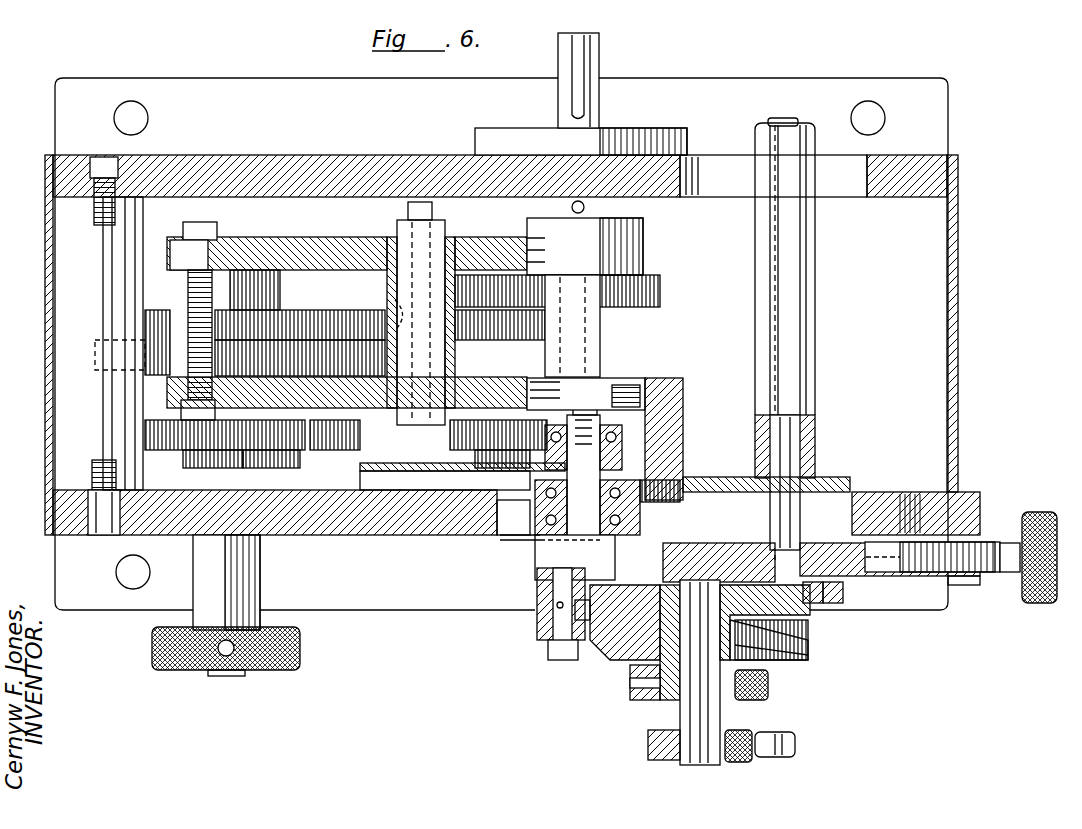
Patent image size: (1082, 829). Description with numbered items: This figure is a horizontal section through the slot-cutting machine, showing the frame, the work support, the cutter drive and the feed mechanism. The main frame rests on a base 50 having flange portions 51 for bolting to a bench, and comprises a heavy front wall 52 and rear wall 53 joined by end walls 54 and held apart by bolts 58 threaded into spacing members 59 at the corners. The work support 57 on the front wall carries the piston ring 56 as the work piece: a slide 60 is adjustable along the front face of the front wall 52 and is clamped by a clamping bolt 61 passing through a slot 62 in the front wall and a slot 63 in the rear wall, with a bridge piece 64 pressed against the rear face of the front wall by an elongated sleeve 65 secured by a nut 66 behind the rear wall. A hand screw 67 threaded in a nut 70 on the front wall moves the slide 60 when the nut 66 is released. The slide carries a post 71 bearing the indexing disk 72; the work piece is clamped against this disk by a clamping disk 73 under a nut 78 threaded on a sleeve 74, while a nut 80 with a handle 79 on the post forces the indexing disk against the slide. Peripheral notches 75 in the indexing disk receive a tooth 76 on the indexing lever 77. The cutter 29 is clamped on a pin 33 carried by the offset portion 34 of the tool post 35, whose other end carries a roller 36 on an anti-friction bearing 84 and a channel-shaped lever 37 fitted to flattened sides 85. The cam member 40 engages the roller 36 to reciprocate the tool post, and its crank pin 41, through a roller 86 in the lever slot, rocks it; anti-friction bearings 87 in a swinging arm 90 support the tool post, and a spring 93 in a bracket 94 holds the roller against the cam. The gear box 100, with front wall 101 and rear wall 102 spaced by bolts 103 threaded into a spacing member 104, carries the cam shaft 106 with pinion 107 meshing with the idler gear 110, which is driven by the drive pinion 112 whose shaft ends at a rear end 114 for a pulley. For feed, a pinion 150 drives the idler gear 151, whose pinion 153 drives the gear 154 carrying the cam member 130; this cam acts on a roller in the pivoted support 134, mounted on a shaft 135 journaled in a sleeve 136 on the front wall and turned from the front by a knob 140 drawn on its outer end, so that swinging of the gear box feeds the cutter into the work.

The cutter 29 is at (590, 635).
The pin 33 is at (537, 615).
The offset portion 34 is at (537, 560).
The tool post 35 is at (665, 555).
The roller 36 is at (605, 430).
The lever 37 is at (440, 478).
The cam member 40 is at (335, 452).
The crank pin 41 is at (472, 471).
The base 50 is at (50, 536).
The flange portions 51 is at (251, 85).
The front wall 52 is at (396, 536).
The rear wall 53 is at (406, 157).
The end walls 54 is at (46, 290).
The piston ring 56 is at (808, 630).
The work support 57 is at (800, 655).
The bolts 58 is at (97, 157).
The spacing members 59 is at (76, 412).
The slide 60 is at (878, 568).
The clamping bolt 61 is at (805, 442).
The slot 62 is at (860, 505).
The slot 63 is at (866, 180).
The bridge piece 64 is at (737, 478).
The sleeve 65 is at (817, 378).
The nut 66 is at (760, 132).
The hand screw 67 is at (1005, 573).
The nut 70 is at (1020, 528).
The post 71 is at (685, 768).
The indexing disk 72 is at (640, 605).
The clamping disk 73 is at (775, 655).
The sleeve 74 is at (672, 705).
The notches 75 is at (553, 594).
The tooth 76 is at (810, 604).
The indexing lever 77 is at (840, 604).
The nut 78 is at (770, 690).
The handle 79 is at (795, 750).
The nut 80 is at (742, 760).
The anti-friction bearing 84 is at (550, 425).
The flattened sides 85 is at (625, 448).
The roller 86 is at (465, 455).
The anti-friction bearings 87 is at (540, 524).
The arm 90 is at (520, 540).
The spring 93 is at (682, 492).
The bracket 94 is at (660, 410).
The gear box 100 is at (343, 222).
The front wall 101 is at (358, 410).
The rear wall 102 is at (285, 227).
The bolts 103 is at (180, 245).
The spacing member 104 is at (143, 293).
The shaft 106 is at (445, 366).
The pinion 107 is at (470, 248).
The idler gear 110 is at (660, 290).
The drive pinion 112 is at (640, 305).
The rear end of drive shaft 114 is at (600, 52).
The cam member 130 is at (150, 436).
The pivoted support 134 is at (190, 455).
The shaft 135 is at (228, 677).
The sleeve 136 is at (262, 465).
The knob 140 is at (300, 646).
The pinion 150 is at (548, 328).
The idler gear 151 is at (290, 322).
The pinion 153 is at (385, 360).
The gear 154 is at (150, 379).